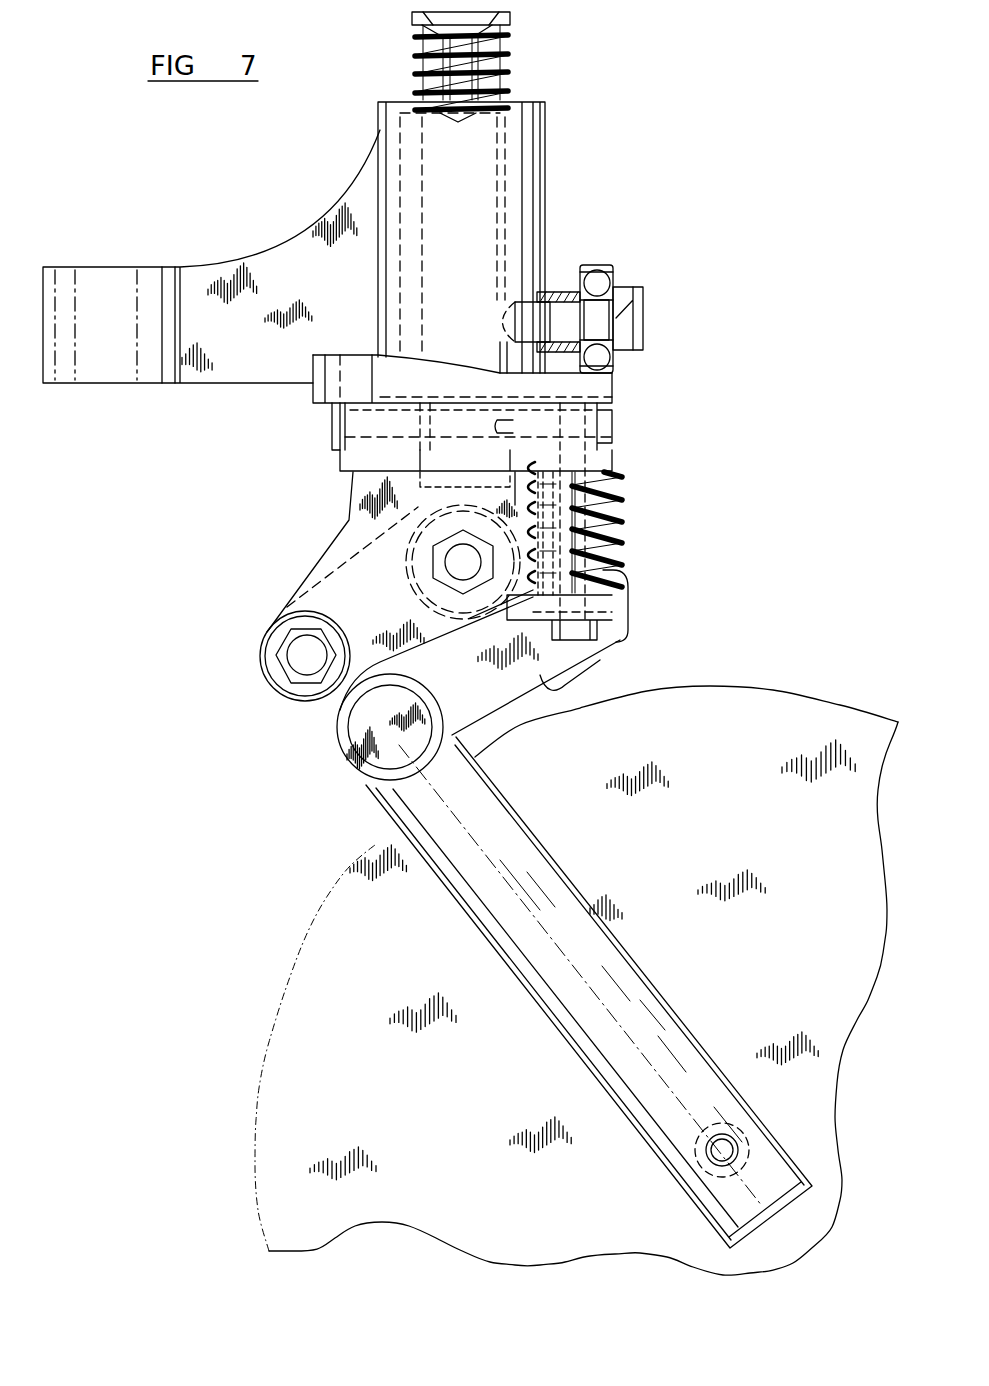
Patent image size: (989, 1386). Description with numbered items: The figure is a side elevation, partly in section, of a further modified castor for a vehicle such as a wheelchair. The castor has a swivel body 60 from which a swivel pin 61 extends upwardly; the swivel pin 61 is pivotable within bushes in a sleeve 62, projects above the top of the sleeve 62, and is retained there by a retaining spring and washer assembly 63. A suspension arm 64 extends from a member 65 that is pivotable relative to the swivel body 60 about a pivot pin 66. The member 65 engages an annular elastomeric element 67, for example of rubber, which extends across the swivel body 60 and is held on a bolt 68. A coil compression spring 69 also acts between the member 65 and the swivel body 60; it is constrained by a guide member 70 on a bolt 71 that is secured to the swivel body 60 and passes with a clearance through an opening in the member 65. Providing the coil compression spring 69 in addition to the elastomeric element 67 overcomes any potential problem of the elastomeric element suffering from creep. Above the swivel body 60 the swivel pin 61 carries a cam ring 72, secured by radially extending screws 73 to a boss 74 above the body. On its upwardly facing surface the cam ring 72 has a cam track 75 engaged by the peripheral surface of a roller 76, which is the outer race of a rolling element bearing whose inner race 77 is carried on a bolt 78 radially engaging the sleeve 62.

The swivel body 60 is at (333, 543).
The swivel pin 61 is at (483, 212).
The sleeve 62 is at (538, 130).
The retaining spring and washer assembly 63 is at (527, 62).
The suspension arm 64 is at (375, 805).
The member 65 is at (550, 688).
The pivot pin 66 is at (310, 657).
The annular elastomeric element 67 is at (427, 577).
The bolt 68 is at (453, 563).
The coil compression spring 69 is at (613, 568).
The guide member 70 is at (623, 537).
The bolt 71 is at (630, 603).
The cam ring 72 is at (612, 388).
The radially extending screws 73 is at (612, 425).
The boss 74 is at (612, 437).
The cam track 75 is at (585, 330).
The roller 76 is at (603, 265).
The inner race 77 is at (612, 290).
The bolt 78 is at (633, 303).